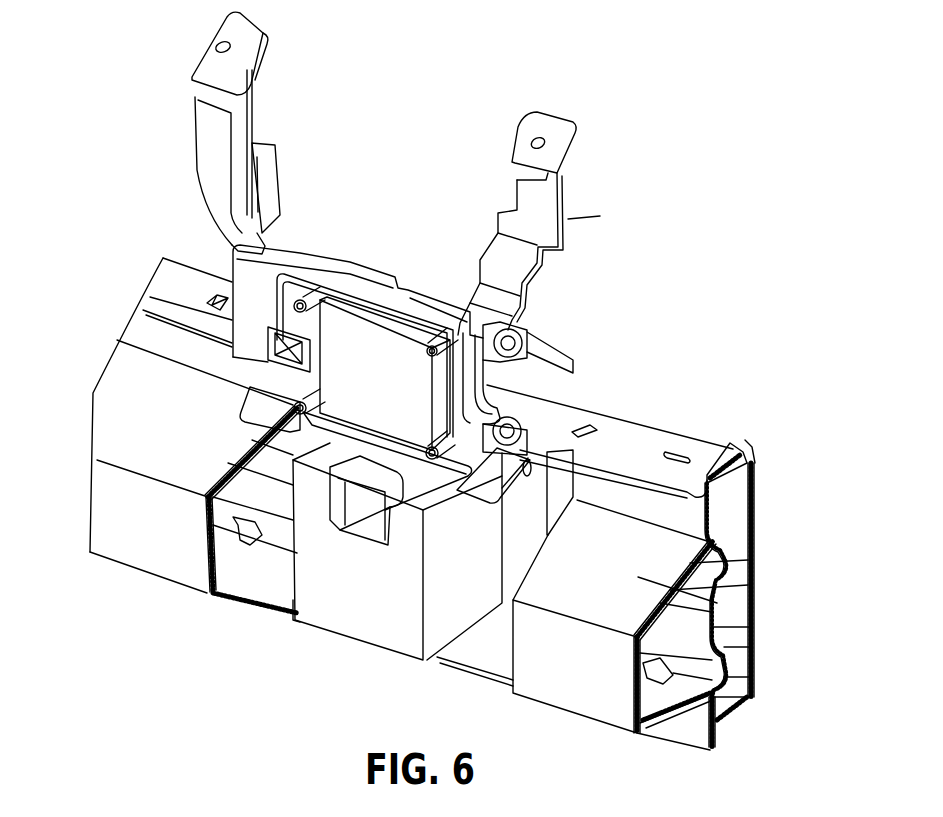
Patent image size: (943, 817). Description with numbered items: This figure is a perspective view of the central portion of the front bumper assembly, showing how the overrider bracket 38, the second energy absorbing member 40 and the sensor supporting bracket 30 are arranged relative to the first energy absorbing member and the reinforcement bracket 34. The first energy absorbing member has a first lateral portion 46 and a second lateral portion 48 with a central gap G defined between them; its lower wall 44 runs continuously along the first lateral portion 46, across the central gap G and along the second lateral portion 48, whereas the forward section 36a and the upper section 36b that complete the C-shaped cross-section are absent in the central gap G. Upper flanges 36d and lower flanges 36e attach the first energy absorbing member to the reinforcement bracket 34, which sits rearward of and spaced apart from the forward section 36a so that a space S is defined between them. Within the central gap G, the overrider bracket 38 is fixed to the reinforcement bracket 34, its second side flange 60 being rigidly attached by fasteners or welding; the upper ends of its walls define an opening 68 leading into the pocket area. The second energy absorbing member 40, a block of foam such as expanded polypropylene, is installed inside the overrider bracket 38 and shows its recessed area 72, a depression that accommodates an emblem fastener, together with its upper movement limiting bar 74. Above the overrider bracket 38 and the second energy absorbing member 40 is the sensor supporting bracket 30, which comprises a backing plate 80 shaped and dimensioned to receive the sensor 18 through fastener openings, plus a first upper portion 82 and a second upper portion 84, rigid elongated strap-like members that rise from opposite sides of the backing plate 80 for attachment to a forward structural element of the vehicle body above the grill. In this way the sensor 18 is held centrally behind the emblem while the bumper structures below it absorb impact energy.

The first upper portion 82 is at (226, 32).
The second upper portion 84 is at (542, 129).
The sensor supporting bracket 30 is at (565, 219).
The sensor 18 is at (362, 355).
The backing plate 80 is at (375, 287).
The upper flanges 36d is at (160, 337).
The upper section 36b is at (123, 418).
The forward section 36a is at (115, 540).
The lower flanges 36e is at (702, 720).
The first lateral portion 46 is at (167, 538).
The space S is at (240, 490).
The opening 68 is at (330, 443).
The upper movement limiting bar 74 is at (458, 445).
The recessed area 72 is at (372, 498).
The second energy absorbing member 40 is at (425, 477).
The overrider bracket 38 is at (365, 598).
The lower wall 44 is at (475, 645).
The central gap G is at (513, 657).
The second lateral portion 48 is at (550, 672).
The second side flange 60 is at (520, 523).
The reinforcement bracket 34 is at (760, 506).